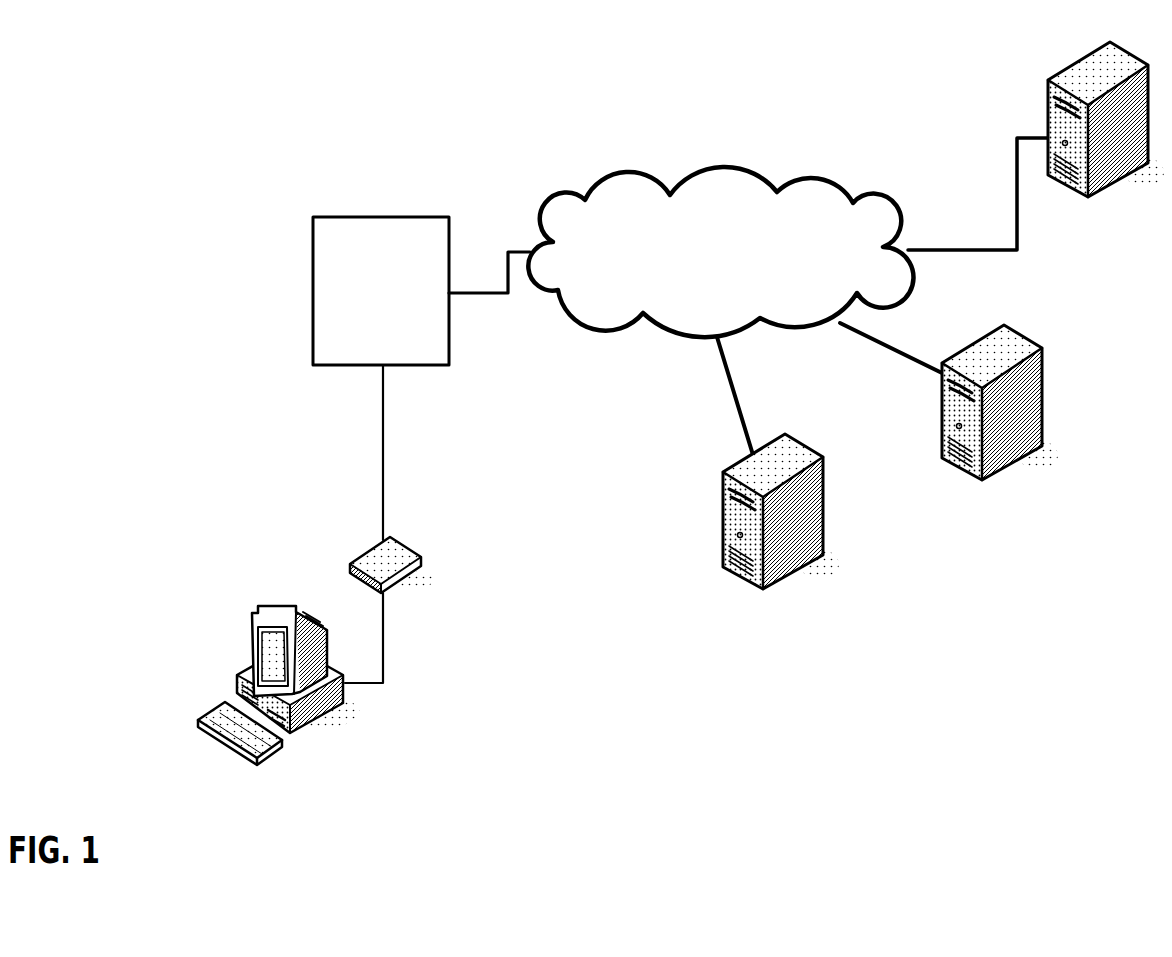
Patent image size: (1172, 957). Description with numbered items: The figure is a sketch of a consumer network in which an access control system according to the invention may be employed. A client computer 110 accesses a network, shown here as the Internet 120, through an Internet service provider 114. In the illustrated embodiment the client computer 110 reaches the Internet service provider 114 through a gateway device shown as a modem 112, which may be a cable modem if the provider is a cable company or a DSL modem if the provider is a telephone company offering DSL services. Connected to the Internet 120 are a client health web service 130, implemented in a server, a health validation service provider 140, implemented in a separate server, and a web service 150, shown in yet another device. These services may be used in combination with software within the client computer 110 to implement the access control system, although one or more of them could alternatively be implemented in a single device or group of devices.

The client computer 110 is at (253, 759).
The modem 112 is at (430, 570).
The Internet service provider 114 is at (410, 330).
The Internet 120 is at (745, 266).
The client health web service 130 is at (1043, 457).
The health validation service provider 140 is at (1132, 173).
The web service 150 is at (820, 562).